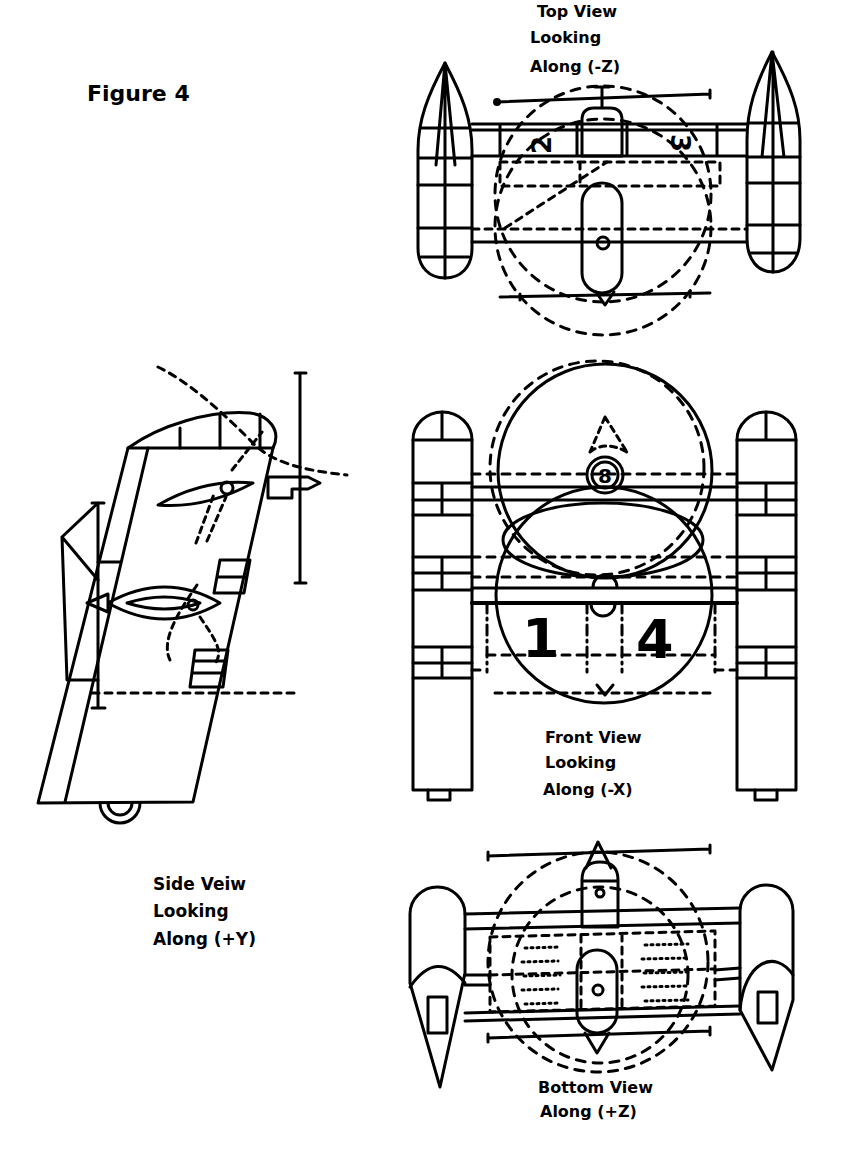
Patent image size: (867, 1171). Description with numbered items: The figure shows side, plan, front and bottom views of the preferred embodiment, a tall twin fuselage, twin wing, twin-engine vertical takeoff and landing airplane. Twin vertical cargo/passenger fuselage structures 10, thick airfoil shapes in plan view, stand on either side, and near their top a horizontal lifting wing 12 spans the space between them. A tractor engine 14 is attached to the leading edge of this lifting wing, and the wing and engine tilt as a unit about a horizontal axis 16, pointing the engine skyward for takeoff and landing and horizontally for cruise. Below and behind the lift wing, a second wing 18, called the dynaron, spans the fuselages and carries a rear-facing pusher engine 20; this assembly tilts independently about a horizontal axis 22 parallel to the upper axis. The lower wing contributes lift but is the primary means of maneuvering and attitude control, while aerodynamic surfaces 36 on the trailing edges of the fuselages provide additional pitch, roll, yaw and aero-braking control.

The fuselage structure 10 is at (207, 760).
The upper lift wing 12 is at (187, 497).
The tractor engine 14 is at (272, 480).
The upper wing rotation axis 16 is at (214, 486).
The lower wing (dynaron) 18 is at (130, 604).
The pusher engine 20 is at (158, 588).
The lower wing rotation axis 22 is at (200, 607).
The fuselage trailing edge aerodynamic surfaces 36 is at (62, 537).